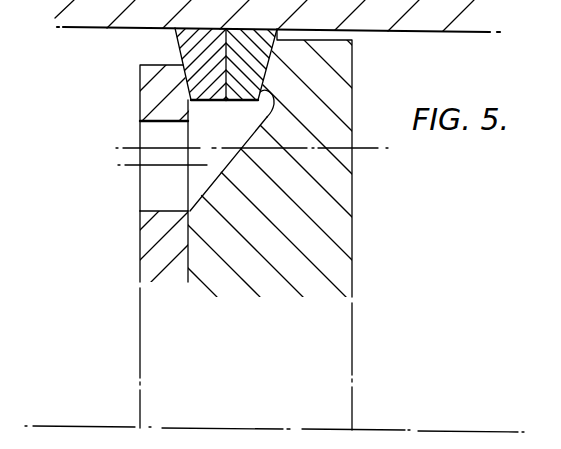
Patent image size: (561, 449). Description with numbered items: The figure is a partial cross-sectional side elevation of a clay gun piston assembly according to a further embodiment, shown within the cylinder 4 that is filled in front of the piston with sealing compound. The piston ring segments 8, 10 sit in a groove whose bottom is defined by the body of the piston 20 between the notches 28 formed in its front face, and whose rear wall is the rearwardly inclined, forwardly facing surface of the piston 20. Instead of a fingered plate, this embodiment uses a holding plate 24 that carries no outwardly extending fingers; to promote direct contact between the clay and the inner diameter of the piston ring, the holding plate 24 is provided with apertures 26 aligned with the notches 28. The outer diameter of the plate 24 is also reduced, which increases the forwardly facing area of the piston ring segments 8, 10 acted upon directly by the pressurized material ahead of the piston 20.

The cylinder 4 is at (107, 5).
The piston ring segment 8 is at (200, 49).
The piston ring segment 10 is at (250, 62).
The piston 20 is at (325, 189).
The holding plate 24 is at (148, 237).
The apertures 26 is at (150, 196).
The notches 28 is at (207, 190).